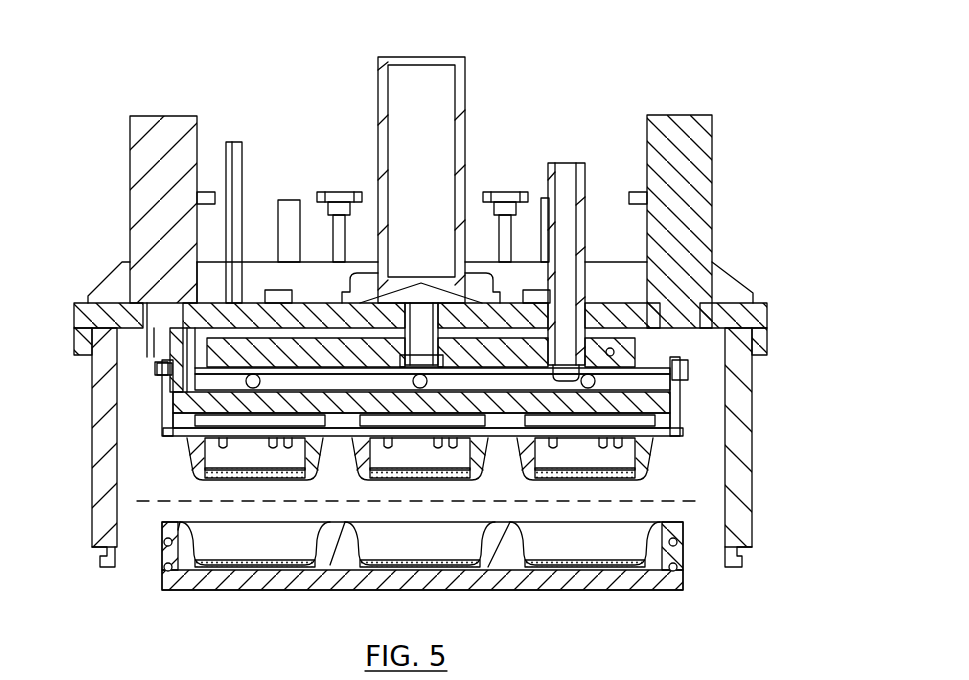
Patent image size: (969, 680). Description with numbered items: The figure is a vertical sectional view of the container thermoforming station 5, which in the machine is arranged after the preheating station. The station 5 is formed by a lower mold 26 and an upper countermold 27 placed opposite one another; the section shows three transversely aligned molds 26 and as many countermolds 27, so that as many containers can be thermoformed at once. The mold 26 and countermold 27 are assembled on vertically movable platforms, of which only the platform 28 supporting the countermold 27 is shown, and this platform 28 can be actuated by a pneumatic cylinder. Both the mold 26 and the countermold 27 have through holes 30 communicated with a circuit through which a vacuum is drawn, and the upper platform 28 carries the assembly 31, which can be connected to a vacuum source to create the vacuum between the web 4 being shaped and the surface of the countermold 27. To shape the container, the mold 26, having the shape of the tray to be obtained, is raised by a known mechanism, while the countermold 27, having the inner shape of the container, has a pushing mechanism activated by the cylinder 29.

The container thermoforming station 5 is at (690, 70).
The platform 28 is at (99, 267).
The cylinder 29 is at (458, 90).
The assembly 31 is at (563, 162).
The countermold 27 is at (647, 460).
The web 4 is at (157, 500).
The lower mold 26 is at (267, 580).
The through holes 30 is at (253, 478).